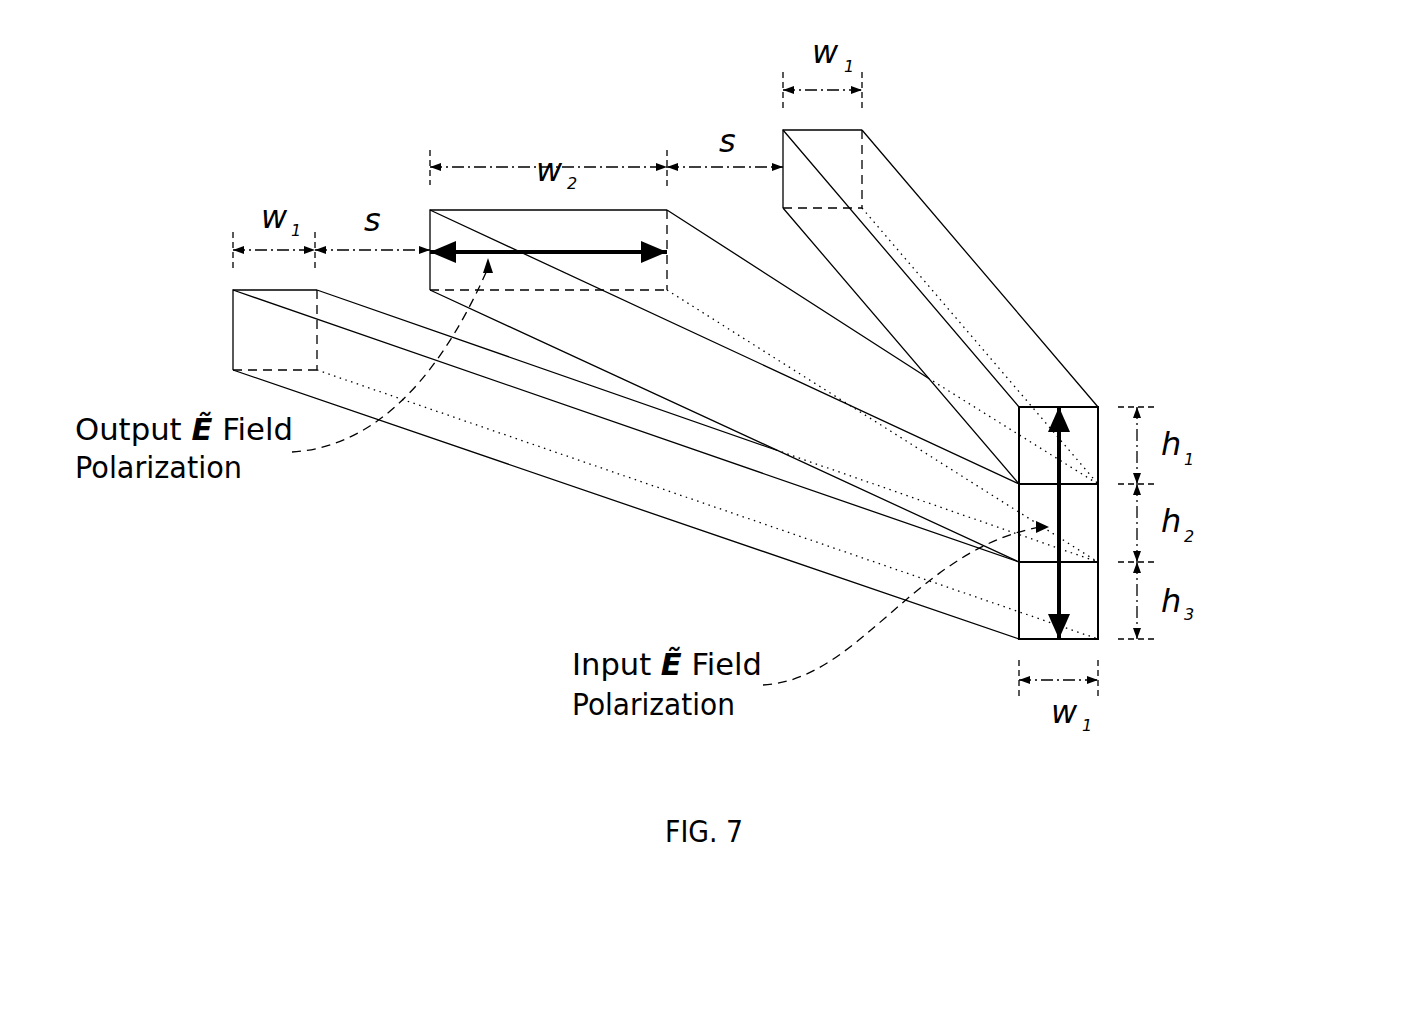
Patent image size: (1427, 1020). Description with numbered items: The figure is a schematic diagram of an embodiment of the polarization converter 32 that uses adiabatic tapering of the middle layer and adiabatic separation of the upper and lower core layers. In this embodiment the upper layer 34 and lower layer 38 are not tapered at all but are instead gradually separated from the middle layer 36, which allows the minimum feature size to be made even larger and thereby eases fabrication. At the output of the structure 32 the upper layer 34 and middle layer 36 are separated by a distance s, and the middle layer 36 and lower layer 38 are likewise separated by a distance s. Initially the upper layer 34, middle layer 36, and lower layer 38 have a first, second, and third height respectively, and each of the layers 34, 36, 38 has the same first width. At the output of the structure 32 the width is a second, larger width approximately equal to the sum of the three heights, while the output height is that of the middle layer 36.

The polarization converter 32 is at (818, 481).
The upper layer 34 is at (1085, 425).
The middle layer 36 is at (1070, 511).
The lower layer 38 is at (1070, 573).